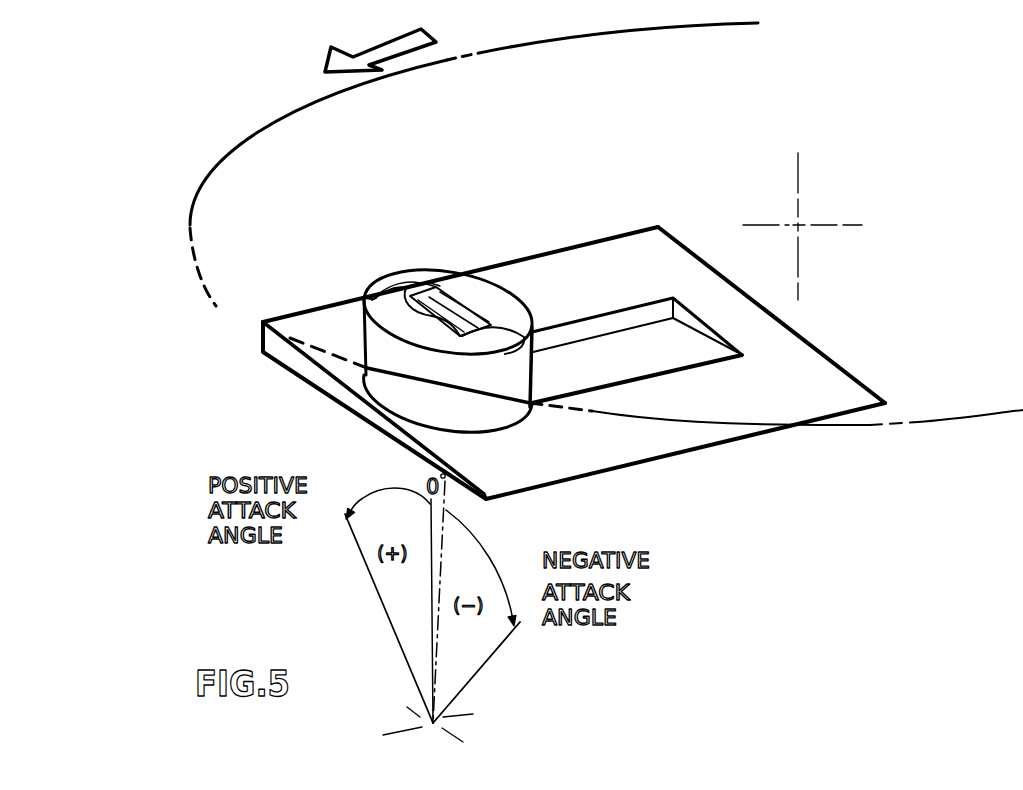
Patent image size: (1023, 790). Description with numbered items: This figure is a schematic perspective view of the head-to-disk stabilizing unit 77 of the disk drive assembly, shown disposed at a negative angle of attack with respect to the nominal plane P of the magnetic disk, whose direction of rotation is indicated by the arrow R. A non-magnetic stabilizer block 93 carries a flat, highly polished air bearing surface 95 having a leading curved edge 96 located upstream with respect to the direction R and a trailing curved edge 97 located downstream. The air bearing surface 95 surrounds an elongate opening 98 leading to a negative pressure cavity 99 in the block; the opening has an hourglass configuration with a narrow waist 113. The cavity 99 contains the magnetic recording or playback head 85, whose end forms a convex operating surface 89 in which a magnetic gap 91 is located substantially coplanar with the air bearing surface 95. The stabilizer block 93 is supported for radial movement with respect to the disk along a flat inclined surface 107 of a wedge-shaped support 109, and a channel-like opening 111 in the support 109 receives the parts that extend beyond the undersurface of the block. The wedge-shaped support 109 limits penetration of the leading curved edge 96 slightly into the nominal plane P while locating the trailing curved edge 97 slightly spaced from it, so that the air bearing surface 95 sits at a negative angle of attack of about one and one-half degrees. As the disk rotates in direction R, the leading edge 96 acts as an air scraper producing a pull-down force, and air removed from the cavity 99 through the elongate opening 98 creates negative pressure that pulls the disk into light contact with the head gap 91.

The head-to-disk stabilizing unit 77 is at (548, 388).
The magnetic recording or playback head 85 is at (476, 310).
The operating surface 89 is at (448, 292).
The magnetic gap 91 is at (445, 274).
The stabilizer block 93 is at (538, 375).
The air bearing surface 95 is at (507, 318).
The leading curved edge 96 is at (410, 278).
The trailing curved edge 97 is at (513, 378).
The elongate opening 98 is at (418, 277).
The negative pressure cavity 99 is at (508, 331).
The flat inclined surface 107 is at (610, 251).
The wedge-shaped support 109 is at (690, 241).
The channel-like opening 111 is at (692, 354).
The narrow waist 113 is at (366, 291).
The nominal plane of the disk P is at (258, 132).
The direction of disk rotation R is at (328, 49).